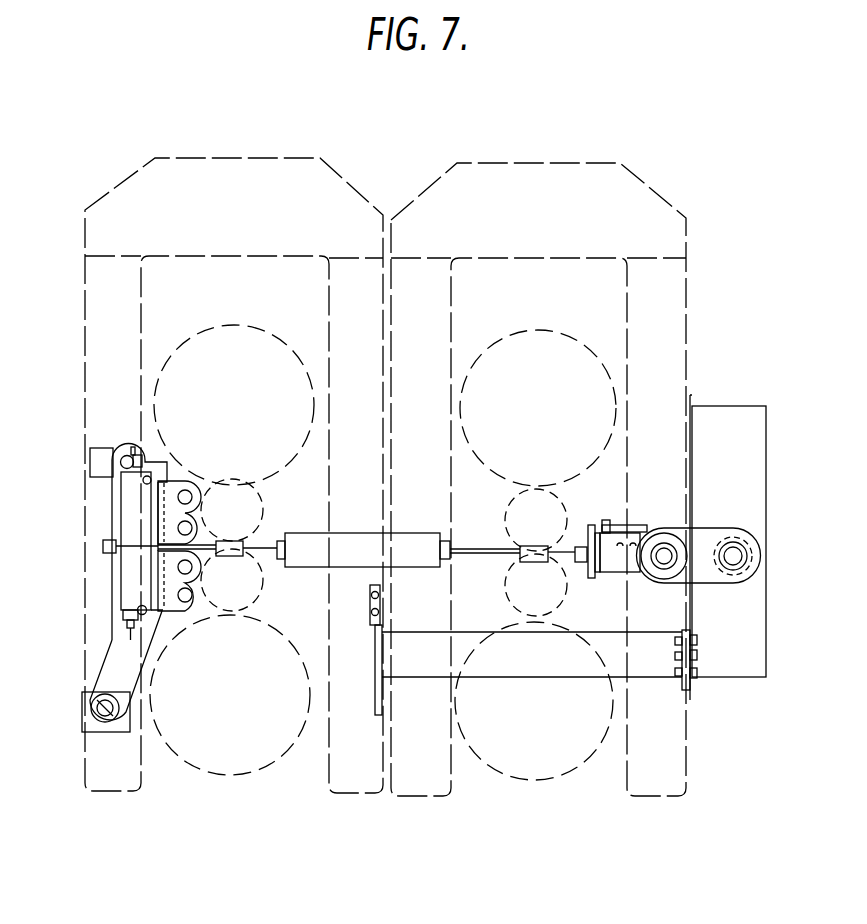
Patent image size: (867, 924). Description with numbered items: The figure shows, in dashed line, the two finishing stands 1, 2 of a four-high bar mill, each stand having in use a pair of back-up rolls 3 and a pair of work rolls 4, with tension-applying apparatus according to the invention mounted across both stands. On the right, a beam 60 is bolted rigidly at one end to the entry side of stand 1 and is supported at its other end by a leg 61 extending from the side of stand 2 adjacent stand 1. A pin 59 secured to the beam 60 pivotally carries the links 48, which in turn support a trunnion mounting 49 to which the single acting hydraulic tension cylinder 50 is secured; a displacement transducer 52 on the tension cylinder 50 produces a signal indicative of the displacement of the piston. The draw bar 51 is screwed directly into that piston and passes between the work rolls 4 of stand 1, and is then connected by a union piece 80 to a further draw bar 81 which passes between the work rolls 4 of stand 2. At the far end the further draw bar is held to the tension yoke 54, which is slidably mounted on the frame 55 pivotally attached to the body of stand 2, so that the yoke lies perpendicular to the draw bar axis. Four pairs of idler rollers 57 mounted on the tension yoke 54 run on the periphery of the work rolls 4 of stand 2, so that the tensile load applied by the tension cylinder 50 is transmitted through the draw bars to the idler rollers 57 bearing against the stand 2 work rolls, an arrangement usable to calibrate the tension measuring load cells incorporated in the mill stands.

The stand 1 is at (610, 188).
The stand 2 is at (320, 178).
The back-up rolls 3 is at (242, 345).
The work rolls 4 is at (252, 498).
The links 48 is at (703, 578).
The trunnion mounting 49 is at (665, 549).
The tension cylinder 50 is at (633, 568).
The draw bar 51 is at (553, 565).
The displacement transducer 52 is at (623, 524).
The tension yoke 54 is at (145, 614).
The frame 55 is at (132, 675).
The idler rollers 57 is at (192, 511).
The pin 59 is at (731, 548).
The beam 60 is at (717, 412).
The leg 61 is at (492, 637).
The union piece 80 is at (333, 543).
The further draw bar 81 is at (260, 553).